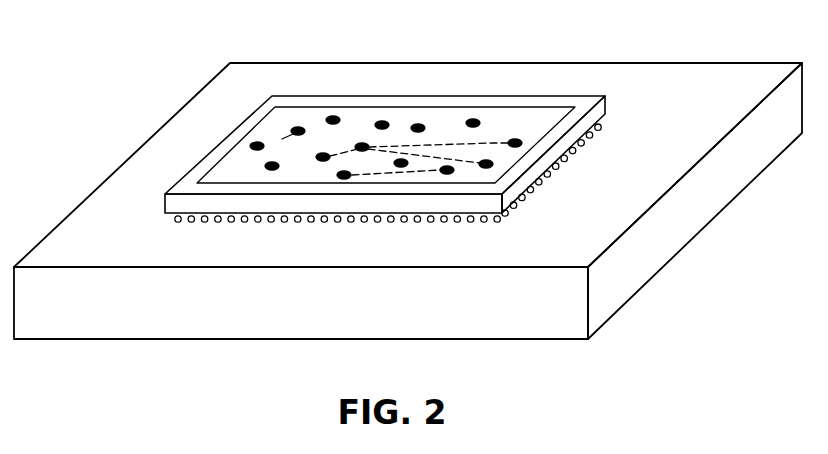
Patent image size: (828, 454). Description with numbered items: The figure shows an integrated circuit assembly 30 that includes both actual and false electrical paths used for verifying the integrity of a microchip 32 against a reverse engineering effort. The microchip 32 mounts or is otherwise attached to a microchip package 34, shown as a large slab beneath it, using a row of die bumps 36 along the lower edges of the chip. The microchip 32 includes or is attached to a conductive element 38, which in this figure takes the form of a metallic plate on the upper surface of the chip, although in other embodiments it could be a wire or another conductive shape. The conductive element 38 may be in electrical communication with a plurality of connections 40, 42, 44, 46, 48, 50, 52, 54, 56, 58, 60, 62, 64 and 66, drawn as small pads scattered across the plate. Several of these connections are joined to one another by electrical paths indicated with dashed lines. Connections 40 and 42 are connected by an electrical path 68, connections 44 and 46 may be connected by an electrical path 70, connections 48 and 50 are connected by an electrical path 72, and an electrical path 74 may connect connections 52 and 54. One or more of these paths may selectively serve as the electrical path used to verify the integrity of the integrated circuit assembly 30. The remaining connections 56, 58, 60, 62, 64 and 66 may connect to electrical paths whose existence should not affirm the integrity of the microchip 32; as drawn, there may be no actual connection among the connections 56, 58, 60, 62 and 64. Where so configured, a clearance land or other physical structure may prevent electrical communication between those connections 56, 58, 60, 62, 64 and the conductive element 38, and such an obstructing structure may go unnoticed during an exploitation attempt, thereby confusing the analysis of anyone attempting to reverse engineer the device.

The integrated circuit assembly 30 is at (412, 37).
The microchip 32 is at (365, 158).
The microchip package 34 is at (212, 323).
The die bumps 36 is at (285, 222).
The conductive element 38 is at (231, 167).
The connection 40 is at (258, 143).
The connection 42 is at (298, 128).
The connection 44 is at (325, 157).
The connection 46 is at (524, 143).
The connection 48 is at (362, 144).
The connection 50 is at (492, 164).
The connection 52 is at (345, 178).
The connection 54 is at (449, 173).
The connection 56 is at (268, 166).
The connection 58 is at (333, 117).
The connection 60 is at (382, 121).
The connection 62 is at (419, 124).
The connection 64 is at (474, 120).
The connection 66 is at (402, 166).
The electrical path 68 is at (275, 138).
The electrical path 70 is at (492, 143).
The electrical path 72 is at (435, 158).
The electrical path 74 is at (382, 175).